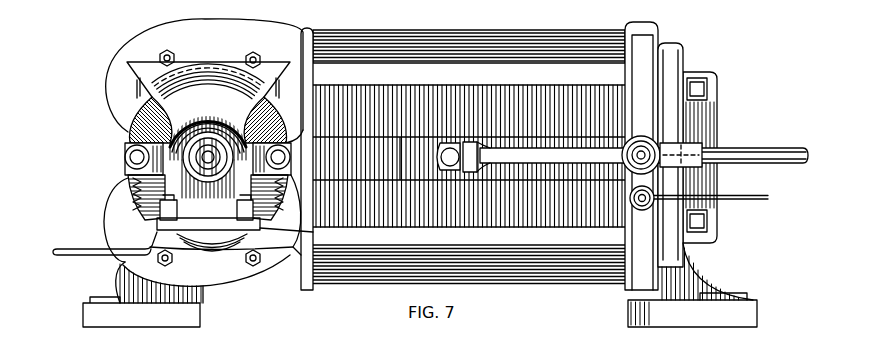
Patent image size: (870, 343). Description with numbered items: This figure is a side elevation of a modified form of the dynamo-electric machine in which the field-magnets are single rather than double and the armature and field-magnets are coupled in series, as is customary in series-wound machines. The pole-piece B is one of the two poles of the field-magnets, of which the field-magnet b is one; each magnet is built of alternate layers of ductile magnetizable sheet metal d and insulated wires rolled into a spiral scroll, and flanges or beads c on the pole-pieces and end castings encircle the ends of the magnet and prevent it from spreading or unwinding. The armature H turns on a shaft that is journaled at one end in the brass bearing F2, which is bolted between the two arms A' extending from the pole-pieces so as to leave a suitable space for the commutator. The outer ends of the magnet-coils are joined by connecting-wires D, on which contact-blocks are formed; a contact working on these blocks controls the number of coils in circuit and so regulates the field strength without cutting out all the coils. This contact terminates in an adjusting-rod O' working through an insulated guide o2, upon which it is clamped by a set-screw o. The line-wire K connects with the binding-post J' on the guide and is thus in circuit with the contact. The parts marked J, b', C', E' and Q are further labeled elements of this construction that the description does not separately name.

The arms A' is at (204, 81).
The pole-piece B is at (202, 230).
The armature H is at (126, 143).
The brass bearing F2 is at (208, 104).
The brush holder J is at (208, 223).
The line-wire K is at (407, 216).
The flanges or beads c is at (469, 57).
The magnetizable metal layer d is at (469, 76).
The connecting-wire D is at (469, 156).
The field-magnet b is at (469, 259).
The armature band b' is at (469, 175).
The set-screw o is at (465, 156).
The insulated guide o2 is at (641, 147).
The adjusting-rod O' is at (642, 151).
The end bracket C' is at (654, 156).
The terminal E' is at (714, 157).
The shaft collar Q is at (695, 145).
The binding-post J' is at (642, 213).